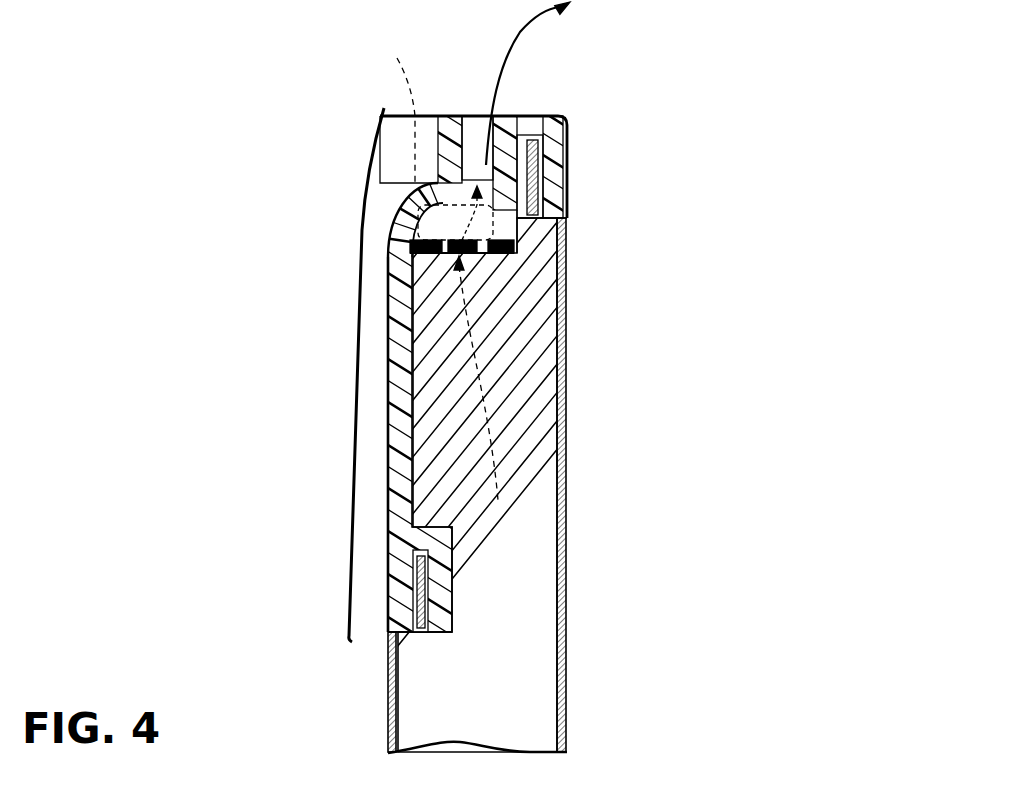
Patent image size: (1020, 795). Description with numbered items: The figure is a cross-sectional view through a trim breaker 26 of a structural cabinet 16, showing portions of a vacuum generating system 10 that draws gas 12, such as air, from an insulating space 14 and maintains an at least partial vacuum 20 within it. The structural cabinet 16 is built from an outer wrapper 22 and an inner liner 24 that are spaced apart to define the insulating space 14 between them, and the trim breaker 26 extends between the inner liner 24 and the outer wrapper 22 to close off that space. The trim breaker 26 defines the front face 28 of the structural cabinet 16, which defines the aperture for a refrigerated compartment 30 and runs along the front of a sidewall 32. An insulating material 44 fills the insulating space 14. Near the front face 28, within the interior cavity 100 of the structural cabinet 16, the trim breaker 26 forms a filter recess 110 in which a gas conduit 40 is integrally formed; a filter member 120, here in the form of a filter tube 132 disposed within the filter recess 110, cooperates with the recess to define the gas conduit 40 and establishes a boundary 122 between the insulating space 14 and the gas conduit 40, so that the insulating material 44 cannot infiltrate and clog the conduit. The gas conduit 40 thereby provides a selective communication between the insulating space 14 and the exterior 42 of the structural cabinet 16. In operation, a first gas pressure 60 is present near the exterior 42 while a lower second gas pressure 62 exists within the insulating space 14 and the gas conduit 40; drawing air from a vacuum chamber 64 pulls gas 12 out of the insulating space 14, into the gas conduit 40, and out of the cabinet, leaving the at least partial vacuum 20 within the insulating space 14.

The vacuum generating system 10 is at (622, 228).
The gas 12 is at (515, 35).
The insulating space 14 is at (508, 682).
The structural cabinet 16 is at (574, 722).
The at least partial vacuum 20 is at (536, 523).
The outer wrapper 22 is at (565, 599).
The inner liner 24 is at (388, 708).
The trim breaker 26 is at (388, 385).
The front face 28 is at (536, 132).
The refrigerated compartment 30 is at (383, 186).
The sidewall 32 is at (560, 466).
The gas conduit 40 is at (392, 222).
The exterior 42 is at (568, 141).
The insulating material 44 is at (423, 735).
The first gas pressure 60 is at (448, 90).
The second gas pressure 62 is at (530, 351).
The vacuum chamber 64 is at (520, 88).
The interior cavity 100 is at (410, 653).
The filter recess 110 is at (512, 212).
The filter member 120 is at (410, 262).
The boundary 122 is at (465, 258).
The filter tube 132 is at (391, 108).